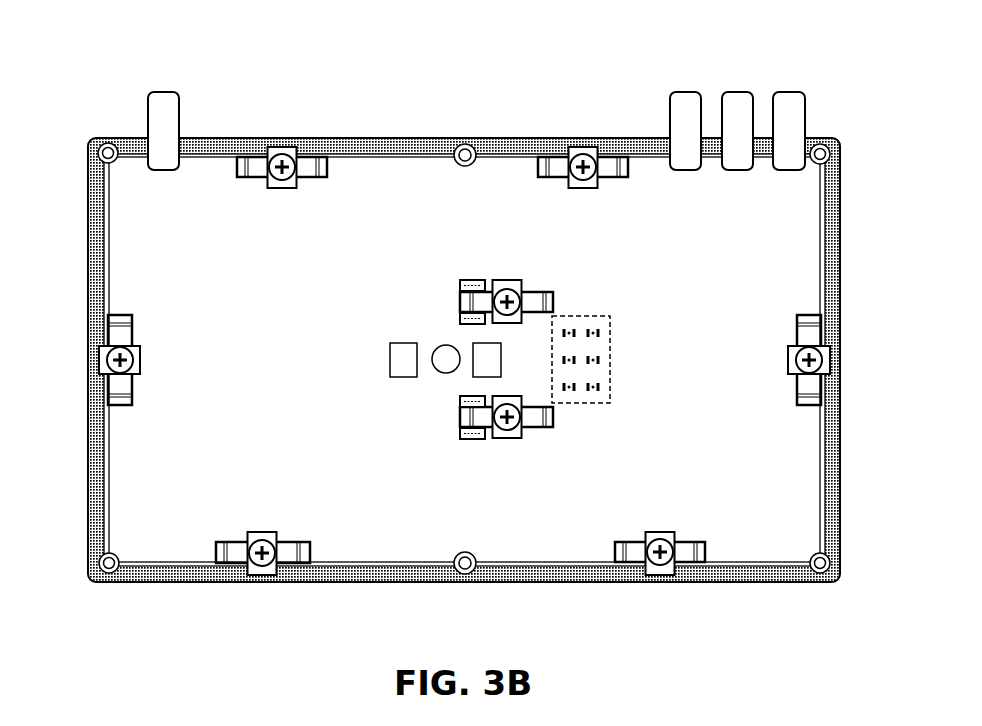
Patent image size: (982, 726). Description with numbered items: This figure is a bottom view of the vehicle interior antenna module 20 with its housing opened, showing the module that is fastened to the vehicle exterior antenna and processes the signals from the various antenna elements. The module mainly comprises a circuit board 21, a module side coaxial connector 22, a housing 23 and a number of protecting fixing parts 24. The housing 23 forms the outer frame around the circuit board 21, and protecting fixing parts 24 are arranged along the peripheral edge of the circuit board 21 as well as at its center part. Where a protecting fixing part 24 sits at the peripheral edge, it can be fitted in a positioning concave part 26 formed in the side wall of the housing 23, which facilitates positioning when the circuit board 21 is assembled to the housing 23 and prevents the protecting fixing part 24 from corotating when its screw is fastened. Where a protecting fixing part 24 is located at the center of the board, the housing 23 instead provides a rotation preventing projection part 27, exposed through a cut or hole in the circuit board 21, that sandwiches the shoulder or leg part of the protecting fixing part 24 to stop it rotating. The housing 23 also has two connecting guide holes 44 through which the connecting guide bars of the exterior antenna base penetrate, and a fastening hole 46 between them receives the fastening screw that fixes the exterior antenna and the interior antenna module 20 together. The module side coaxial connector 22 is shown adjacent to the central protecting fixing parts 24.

The vehicle interior antenna module 20 is at (464, 352).
The circuit board 21 is at (765, 533).
The module side coaxial connector 22 is at (611, 322).
The housing 23 is at (565, 577).
The protecting fixing part 24 is at (464, 405).
The positioning concave part 26 is at (275, 582).
The rotation preventing projection part 27 is at (475, 440).
The connecting guide hole 44 is at (400, 363).
The fastening hole 46 is at (438, 354).